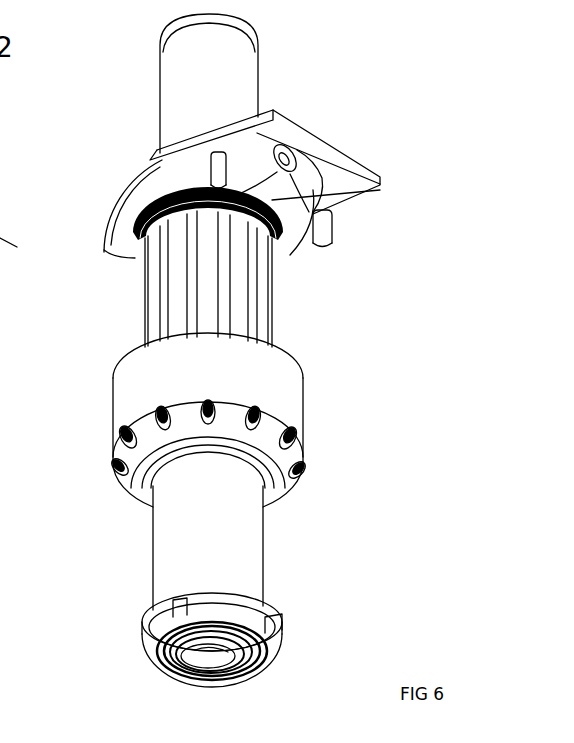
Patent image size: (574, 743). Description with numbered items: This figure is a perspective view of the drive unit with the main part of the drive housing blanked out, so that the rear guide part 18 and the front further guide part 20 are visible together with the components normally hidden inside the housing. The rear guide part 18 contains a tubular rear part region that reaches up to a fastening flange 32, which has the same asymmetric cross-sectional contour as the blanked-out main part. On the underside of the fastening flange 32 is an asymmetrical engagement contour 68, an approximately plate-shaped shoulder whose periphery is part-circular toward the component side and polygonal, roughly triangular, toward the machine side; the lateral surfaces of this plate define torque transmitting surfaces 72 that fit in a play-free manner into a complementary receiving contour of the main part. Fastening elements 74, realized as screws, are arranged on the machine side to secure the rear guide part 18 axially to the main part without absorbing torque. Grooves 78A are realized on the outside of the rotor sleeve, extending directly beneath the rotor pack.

The rear guide part 18 is at (240, 97).
The fastening flange 32 is at (350, 160).
The torque transmitting surfaces 72 is at (198, 170).
The engagement contour 68 is at (334, 213).
The fastening elements 74 is at (330, 236).
The grooves 78A is at (132, 285).
The front further guide part 20 is at (133, 390).